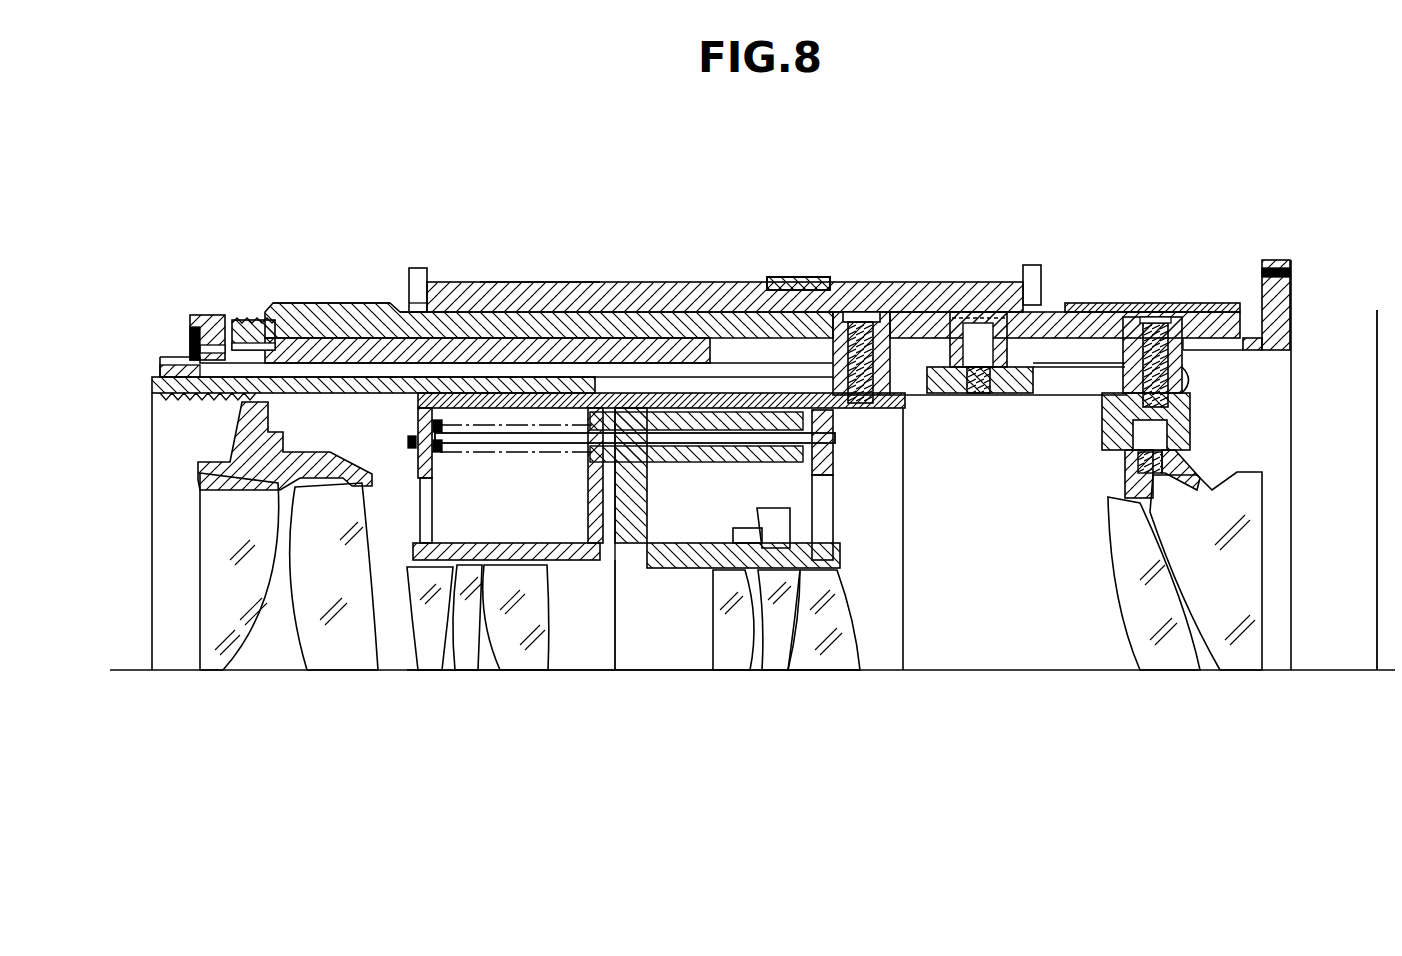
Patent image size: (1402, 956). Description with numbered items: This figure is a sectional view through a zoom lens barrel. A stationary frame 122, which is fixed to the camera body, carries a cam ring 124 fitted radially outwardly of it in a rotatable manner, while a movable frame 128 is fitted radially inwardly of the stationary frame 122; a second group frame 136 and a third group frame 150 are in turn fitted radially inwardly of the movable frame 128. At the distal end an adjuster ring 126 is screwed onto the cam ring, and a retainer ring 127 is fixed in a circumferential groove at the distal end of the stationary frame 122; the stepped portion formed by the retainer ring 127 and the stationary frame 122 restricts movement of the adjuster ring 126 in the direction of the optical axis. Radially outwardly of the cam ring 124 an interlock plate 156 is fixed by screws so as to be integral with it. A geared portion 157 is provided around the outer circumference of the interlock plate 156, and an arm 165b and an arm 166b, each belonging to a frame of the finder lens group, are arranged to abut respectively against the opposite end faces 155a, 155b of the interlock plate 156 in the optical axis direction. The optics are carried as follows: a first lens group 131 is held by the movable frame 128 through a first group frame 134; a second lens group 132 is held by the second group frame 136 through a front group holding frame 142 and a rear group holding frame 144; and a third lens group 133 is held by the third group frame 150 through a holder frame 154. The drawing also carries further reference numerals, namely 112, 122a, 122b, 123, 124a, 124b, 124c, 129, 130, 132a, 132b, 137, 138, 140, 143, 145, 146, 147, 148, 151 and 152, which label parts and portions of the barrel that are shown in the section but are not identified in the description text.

The lens barrel assembly 112 is at (299, 288).
The stationary frame 122 is at (483, 330).
The inner sleeve portion 122a is at (720, 345).
The sleeve flange 122b is at (1292, 322).
The nut 123 is at (250, 318).
The cam ring 124 is at (345, 325).
The barrel portion 124a is at (990, 312).
The barrel block 124b is at (855, 312).
The barrel plate 124c is at (1152, 303).
The adjuster ring 126 is at (200, 327).
The retainer ring 127 is at (196, 315).
The movable frame 128 is at (170, 386).
The screw 129 is at (970, 365).
The shaft 130 is at (162, 365).
The first lens group 131 is at (301, 684).
The second lens group 132 is at (487, 745).
The first lens sub-group 132a is at (483, 686).
The second lens sub-group 132b is at (786, 686).
The third lens group 133 is at (1132, 686).
The first group frame 134 is at (232, 440).
The second group frame 136 is at (420, 404).
The screw 137 is at (872, 345).
The cam ring 138 is at (620, 393).
The wall 140 is at (830, 445).
The front group holding frame 142 is at (545, 545).
The film plane 143 is at (1376, 415).
The rear group holding frame 144 is at (700, 545).
The guide rod 145 is at (445, 455).
The stop 146 is at (745, 528).
The pawl 147 is at (790, 520).
The partition 148 is at (613, 640).
The third group frame 150 is at (1185, 425).
The screw block 151 is at (1160, 323).
The base 152 is at (1058, 390).
The holder frame 154 is at (1125, 470).
The end face of interlock plate 155a is at (405, 310).
The end face of interlock plate 155b is at (1068, 303).
The interlock plate 156 is at (540, 290).
The geared portion 157 is at (790, 278).
The arm 165b is at (418, 268).
The arm 166b is at (1036, 300).